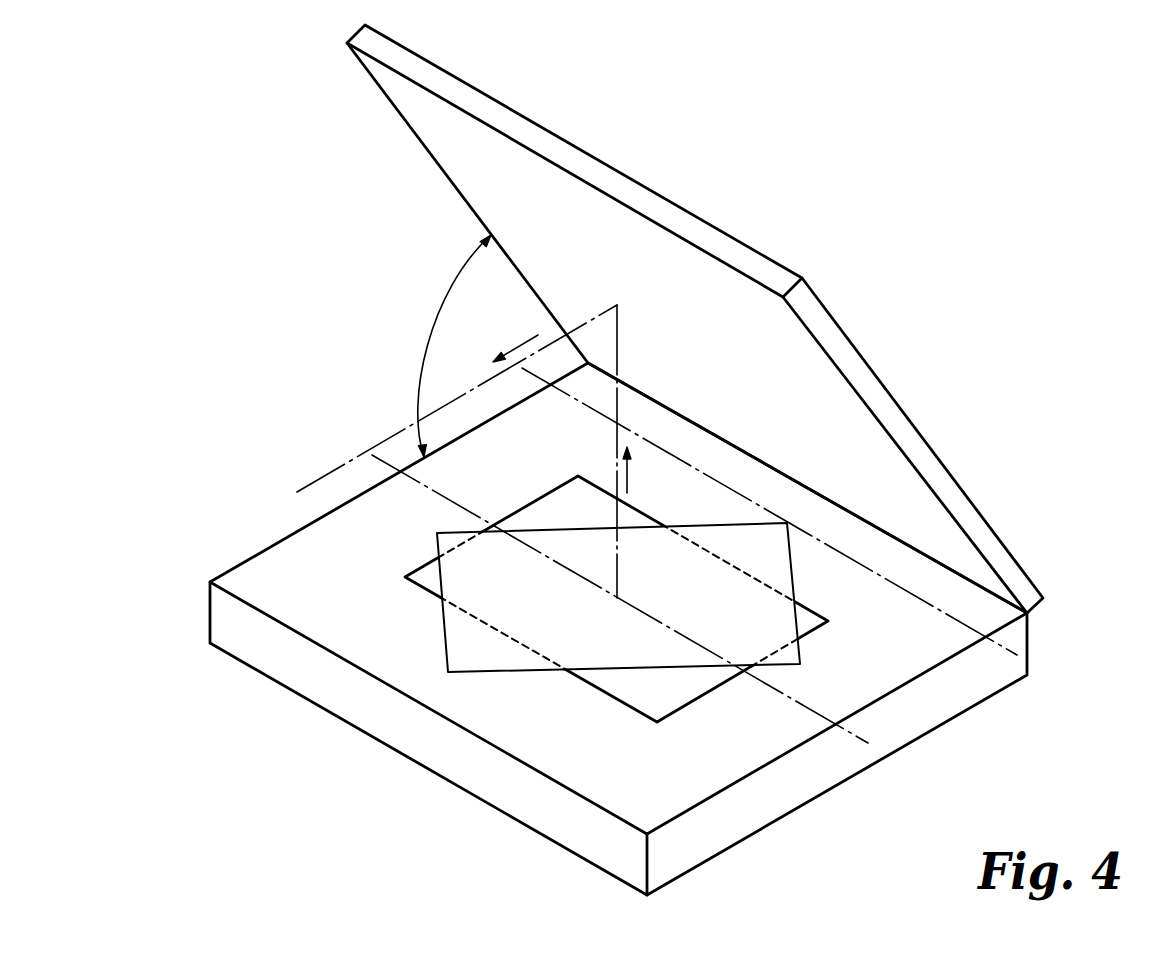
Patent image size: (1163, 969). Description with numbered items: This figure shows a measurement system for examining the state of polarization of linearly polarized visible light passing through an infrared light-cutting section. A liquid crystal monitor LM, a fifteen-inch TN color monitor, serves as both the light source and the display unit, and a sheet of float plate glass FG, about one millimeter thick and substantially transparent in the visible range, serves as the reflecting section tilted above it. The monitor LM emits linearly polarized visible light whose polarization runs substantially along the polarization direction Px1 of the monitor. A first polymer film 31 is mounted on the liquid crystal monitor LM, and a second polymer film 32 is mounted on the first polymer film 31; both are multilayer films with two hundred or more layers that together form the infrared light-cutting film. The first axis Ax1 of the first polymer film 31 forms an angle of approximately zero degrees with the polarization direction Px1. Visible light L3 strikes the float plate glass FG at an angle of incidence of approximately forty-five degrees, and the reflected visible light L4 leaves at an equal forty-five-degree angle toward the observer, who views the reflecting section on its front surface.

The liquid crystal monitor LM is at (787, 813).
The float plate glass FG is at (845, 348).
The first polymer film 31 is at (408, 578).
The second polymer film 32 is at (450, 673).
The first axis Ax1 is at (868, 742).
The polarization direction Px1 is at (1015, 655).
The visible light L3 is at (628, 476).
The visible light L4 is at (522, 343).